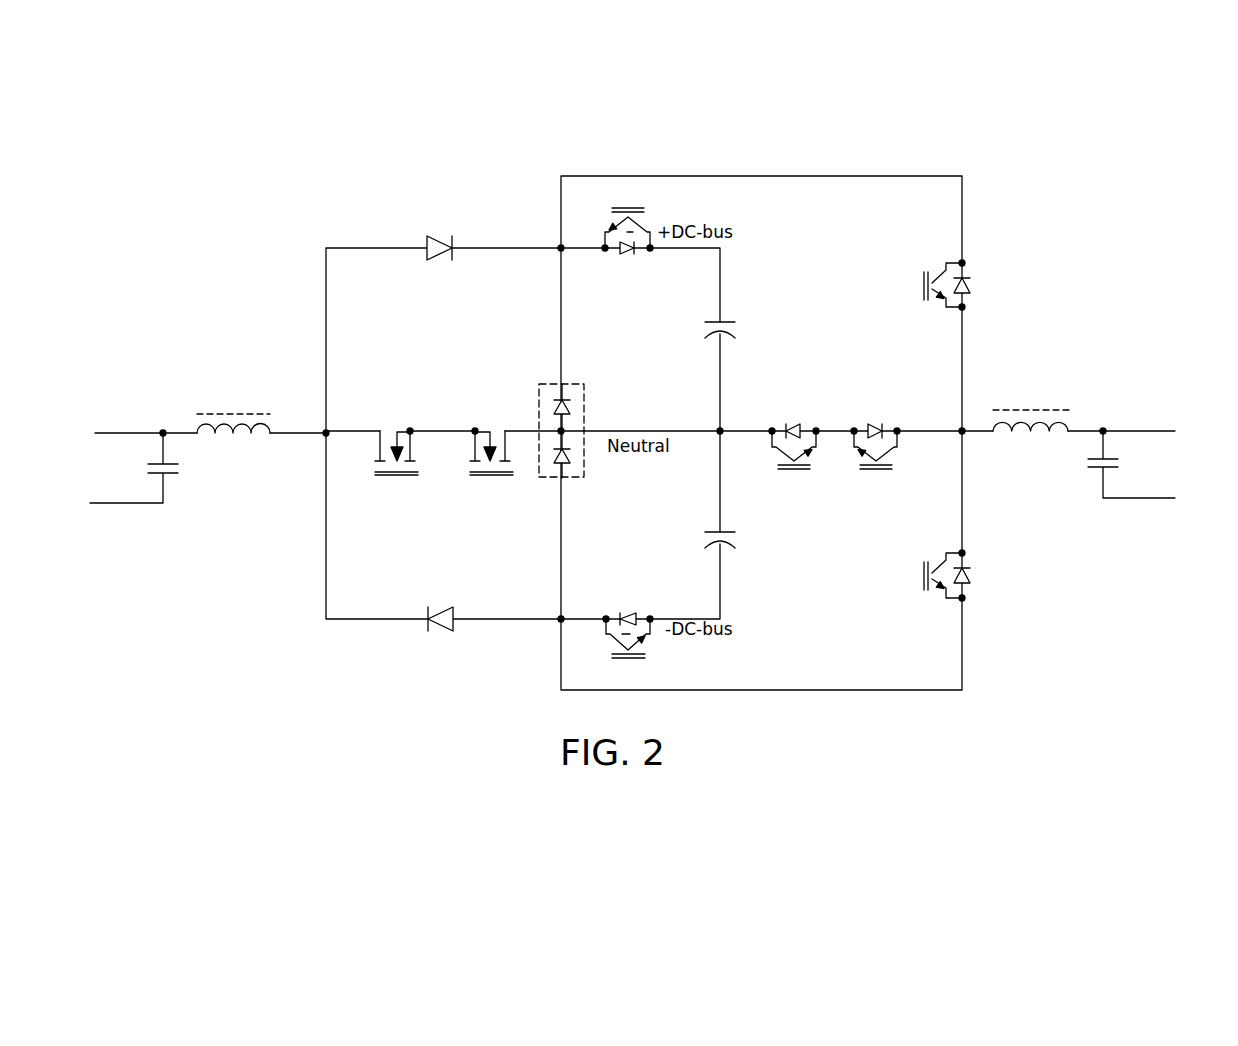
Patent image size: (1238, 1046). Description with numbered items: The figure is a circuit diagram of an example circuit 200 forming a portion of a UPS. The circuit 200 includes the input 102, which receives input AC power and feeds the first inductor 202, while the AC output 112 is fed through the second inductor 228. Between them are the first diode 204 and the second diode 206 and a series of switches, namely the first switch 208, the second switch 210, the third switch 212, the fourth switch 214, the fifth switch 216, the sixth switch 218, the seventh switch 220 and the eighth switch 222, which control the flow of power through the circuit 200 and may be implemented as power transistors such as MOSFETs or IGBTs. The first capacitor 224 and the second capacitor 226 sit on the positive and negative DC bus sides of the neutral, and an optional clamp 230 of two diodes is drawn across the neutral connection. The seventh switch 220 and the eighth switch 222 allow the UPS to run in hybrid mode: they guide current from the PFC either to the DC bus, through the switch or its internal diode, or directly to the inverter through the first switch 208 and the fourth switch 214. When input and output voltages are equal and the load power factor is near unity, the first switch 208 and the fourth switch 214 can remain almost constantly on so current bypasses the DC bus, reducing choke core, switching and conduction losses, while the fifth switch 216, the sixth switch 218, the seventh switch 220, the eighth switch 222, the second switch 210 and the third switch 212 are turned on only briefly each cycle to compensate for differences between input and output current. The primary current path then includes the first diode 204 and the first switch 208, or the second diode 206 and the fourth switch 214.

The circuit 200 is at (1060, 226).
The input 102 is at (121, 410).
The AC output 112 is at (1138, 405).
The inductor L1 202 is at (232, 388).
The diode D1 204 is at (440, 232).
The diode D2 206 is at (440, 633).
The switch S1 208 is at (976, 283).
The switch S2 210 is at (876, 413).
The switch S3 212 is at (793, 413).
The switch S4 214 is at (976, 577).
The switch S5 216 is at (397, 497).
The switch S6 218 is at (490, 497).
The switch S7 220 is at (650, 218).
The switch S8 222 is at (655, 645).
The capacitor C1 224 is at (740, 315).
The capacitor C2 226 is at (742, 553).
The inductor L2 228 is at (1030, 383).
The optional clamp 230 is at (535, 408).